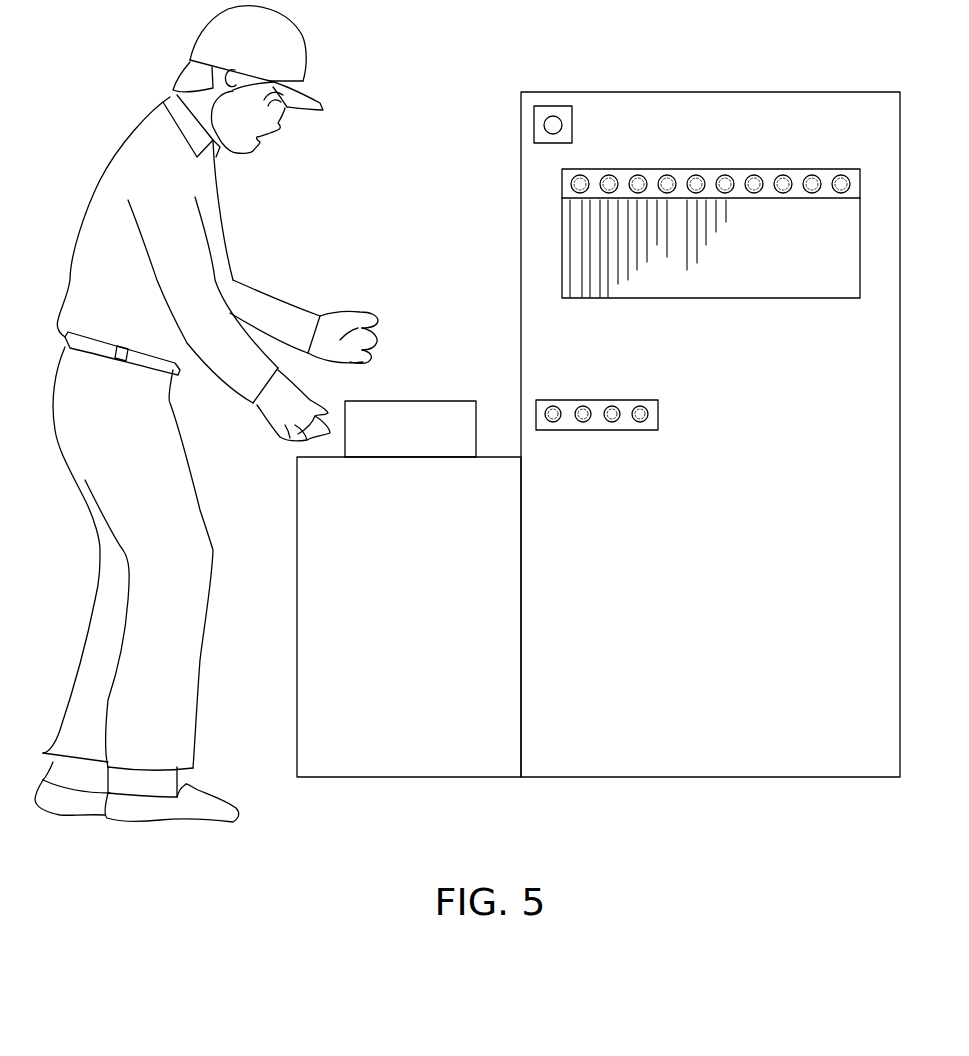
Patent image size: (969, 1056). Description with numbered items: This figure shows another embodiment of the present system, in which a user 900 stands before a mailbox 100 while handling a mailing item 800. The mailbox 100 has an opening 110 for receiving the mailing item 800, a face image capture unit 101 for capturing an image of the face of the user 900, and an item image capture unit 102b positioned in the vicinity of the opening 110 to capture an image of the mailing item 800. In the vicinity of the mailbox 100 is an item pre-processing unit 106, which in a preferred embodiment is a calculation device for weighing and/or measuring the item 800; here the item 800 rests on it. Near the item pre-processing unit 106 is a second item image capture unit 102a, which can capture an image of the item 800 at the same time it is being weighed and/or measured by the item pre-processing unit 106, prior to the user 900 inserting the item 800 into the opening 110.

The user 900 is at (130, 170).
The mailbox 100 is at (692, 592).
The item pre-processing unit 106 is at (425, 594).
The mailing item 800 is at (413, 415).
The face image capture unit 101 is at (552, 105).
The item image capture unit 102b is at (710, 173).
The opening 110 is at (680, 298).
The second item image capture unit 102a is at (597, 430).